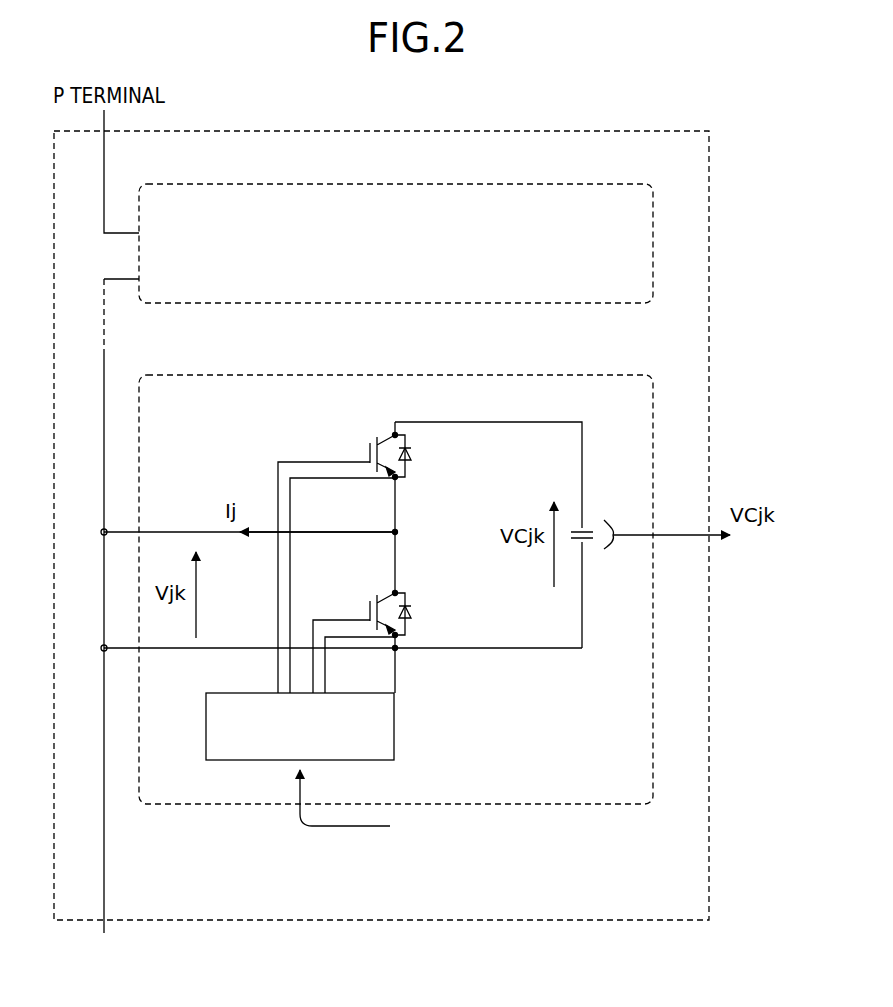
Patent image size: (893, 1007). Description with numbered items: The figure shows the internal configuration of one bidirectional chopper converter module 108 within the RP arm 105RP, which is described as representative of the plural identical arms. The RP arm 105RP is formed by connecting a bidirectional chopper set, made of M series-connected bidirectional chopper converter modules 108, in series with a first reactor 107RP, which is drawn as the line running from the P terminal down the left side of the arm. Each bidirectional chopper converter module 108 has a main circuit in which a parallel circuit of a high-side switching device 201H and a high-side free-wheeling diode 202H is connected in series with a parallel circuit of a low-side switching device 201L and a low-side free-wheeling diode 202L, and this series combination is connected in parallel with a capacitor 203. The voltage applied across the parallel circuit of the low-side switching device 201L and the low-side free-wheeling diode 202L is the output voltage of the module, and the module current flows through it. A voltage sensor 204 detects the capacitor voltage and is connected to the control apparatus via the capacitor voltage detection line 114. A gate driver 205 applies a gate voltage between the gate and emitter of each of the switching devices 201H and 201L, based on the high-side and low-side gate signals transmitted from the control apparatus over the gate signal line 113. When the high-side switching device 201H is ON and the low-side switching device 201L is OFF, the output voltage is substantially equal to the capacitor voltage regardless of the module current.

The RP arm 105RP is at (673, 131).
The first reactor 107RP is at (112, 536).
The bidirectional chopper converter module 108 is at (232, 375).
The high-side switching device 201H is at (368, 450).
The high-side free-wheeling diode 202H is at (420, 457).
The low-side switching device 201L is at (368, 603).
The low-side free-wheeling diode 202L is at (418, 612).
The capacitor 203 is at (578, 542).
The voltage sensor 204 is at (612, 522).
The capacitor voltage detection line 114 is at (665, 535).
The gate driver 205 is at (395, 725).
The gate signal line 113 is at (345, 828).